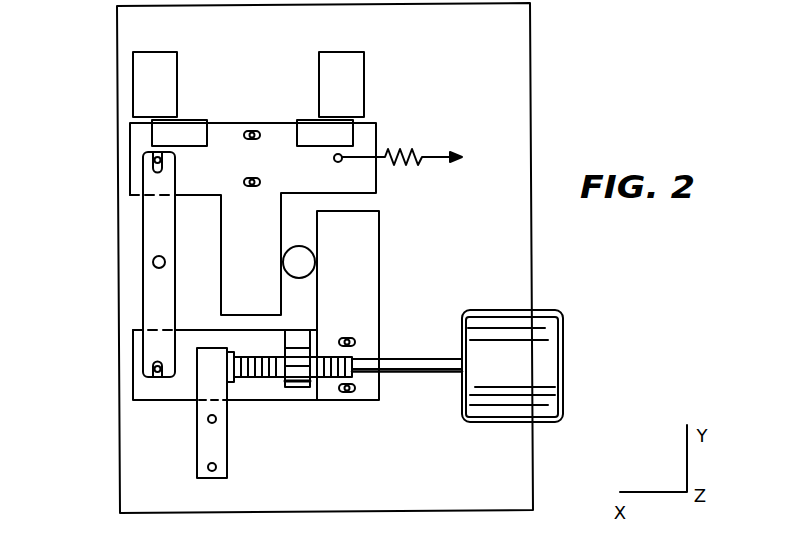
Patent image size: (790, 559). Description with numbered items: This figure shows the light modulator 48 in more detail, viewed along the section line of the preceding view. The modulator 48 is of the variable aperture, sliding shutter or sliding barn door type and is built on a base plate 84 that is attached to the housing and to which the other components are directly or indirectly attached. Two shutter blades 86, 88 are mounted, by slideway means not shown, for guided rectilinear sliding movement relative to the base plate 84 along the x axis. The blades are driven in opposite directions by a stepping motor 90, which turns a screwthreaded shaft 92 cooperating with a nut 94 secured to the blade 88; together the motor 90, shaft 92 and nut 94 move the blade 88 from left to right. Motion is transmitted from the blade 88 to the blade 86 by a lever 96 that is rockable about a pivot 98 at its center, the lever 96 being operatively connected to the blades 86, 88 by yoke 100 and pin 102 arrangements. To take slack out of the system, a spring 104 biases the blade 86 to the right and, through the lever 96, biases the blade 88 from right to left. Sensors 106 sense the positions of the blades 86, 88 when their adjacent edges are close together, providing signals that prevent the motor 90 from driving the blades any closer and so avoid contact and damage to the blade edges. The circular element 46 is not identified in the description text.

The light modulator 48 is at (540, 75).
The base plate 84 is at (368, 464).
The shutter blade 86 is at (266, 245).
The shutter blade 88 is at (370, 282).
The stepping motor 90 is at (542, 374).
The screwthreaded shaft 92 is at (258, 380).
The nut 94 is at (296, 387).
The lever 96 is at (153, 282).
The pivot 98 is at (153, 259).
The yoke 100 is at (148, 172).
The pin 102 is at (152, 162).
The spring 104 is at (403, 150).
The sensors 106 is at (162, 97).
The circular member 46 is at (316, 262).